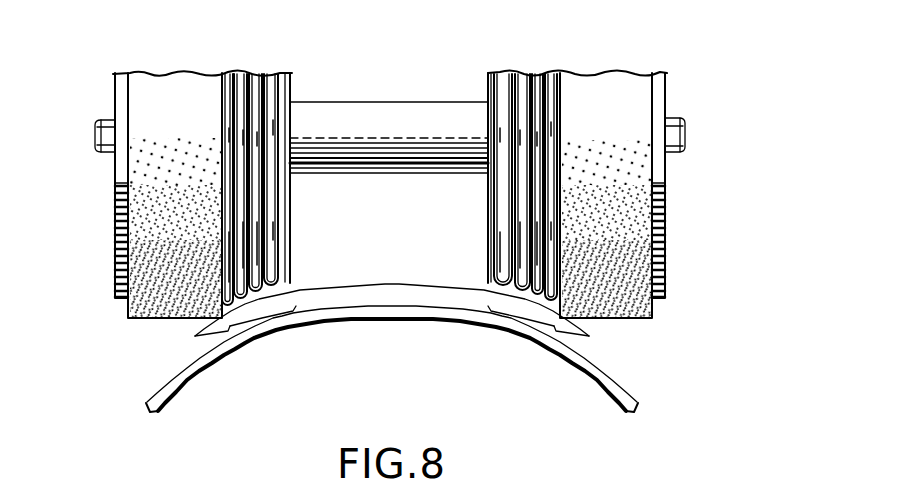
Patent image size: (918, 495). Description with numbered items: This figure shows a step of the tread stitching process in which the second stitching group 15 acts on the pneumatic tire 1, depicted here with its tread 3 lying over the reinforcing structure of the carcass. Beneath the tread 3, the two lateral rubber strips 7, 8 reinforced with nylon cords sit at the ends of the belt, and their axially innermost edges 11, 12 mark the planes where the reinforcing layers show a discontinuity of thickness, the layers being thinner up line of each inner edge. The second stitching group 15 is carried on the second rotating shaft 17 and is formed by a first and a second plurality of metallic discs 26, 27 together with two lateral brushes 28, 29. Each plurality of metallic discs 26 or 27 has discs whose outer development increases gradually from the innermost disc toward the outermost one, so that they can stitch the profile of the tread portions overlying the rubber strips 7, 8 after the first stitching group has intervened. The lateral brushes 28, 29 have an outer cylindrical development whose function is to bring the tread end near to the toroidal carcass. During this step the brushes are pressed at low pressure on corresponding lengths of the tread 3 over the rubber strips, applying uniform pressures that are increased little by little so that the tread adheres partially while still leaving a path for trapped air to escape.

The pneumatic tire 1 is at (625, 370).
The tread 3 is at (405, 297).
The lateral rubber strip reinforced with nylon cords 7 is at (534, 327).
The lateral rubber strip reinforced with nylon cords 8 is at (246, 330).
The axially innermost edge of strip 11 is at (291, 318).
The axially innermost edge of strip 12 is at (484, 310).
The second stitching group 15 is at (102, 75).
The second rotating shaft 17 is at (414, 112).
The first plurality of metallic discs 26 is at (304, 207).
The second plurality of metallic discs 27 is at (476, 224).
The lateral brush 28 is at (150, 207).
The lateral brush 29 is at (640, 205).